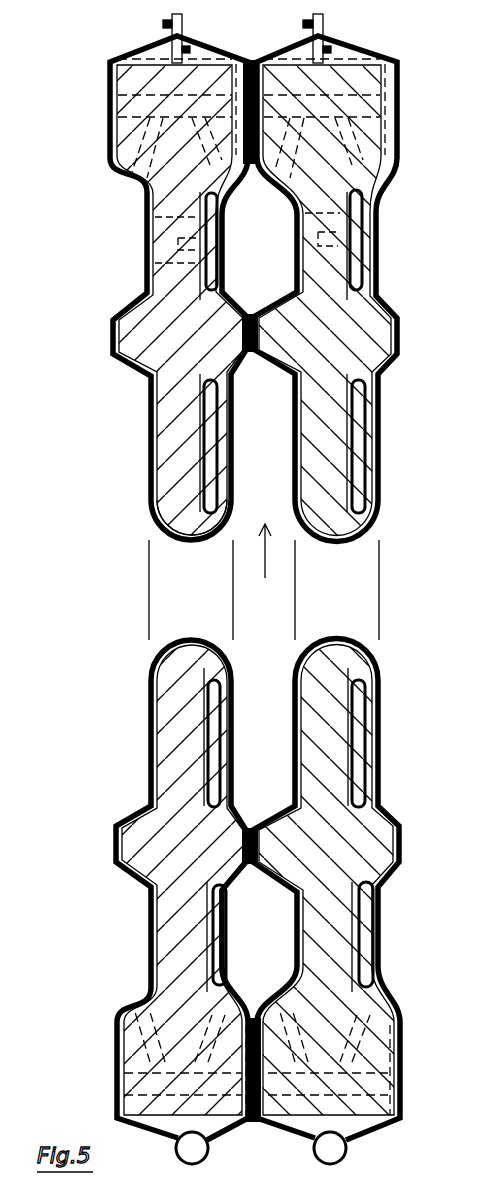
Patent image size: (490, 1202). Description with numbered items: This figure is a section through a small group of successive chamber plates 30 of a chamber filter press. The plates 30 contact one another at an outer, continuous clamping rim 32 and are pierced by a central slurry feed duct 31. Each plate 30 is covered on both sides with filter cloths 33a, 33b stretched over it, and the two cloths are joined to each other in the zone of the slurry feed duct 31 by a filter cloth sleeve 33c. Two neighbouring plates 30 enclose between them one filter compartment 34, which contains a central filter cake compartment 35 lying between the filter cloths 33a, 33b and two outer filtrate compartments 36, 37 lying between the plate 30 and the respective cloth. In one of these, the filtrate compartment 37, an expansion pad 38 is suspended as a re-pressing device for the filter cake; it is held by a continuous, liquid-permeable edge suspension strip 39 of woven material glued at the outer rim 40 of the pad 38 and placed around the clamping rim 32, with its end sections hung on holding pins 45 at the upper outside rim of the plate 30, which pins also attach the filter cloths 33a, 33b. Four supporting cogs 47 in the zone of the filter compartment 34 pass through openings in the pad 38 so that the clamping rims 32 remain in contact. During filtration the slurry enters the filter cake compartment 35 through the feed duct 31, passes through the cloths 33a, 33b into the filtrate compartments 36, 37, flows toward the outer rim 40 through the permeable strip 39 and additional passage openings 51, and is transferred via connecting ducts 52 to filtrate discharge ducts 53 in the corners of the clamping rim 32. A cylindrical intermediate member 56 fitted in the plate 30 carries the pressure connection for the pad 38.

The chamber plate 30 is at (168, 451).
The central slurry feed duct 31 is at (362, 603).
The outer continuous clamping rim 32 is at (378, 54).
The filter cloth 33a is at (150, 263).
The filter cloth 33b is at (228, 478).
The filter cloth sleeve 33c is at (195, 545).
The filter compartment 34 is at (264, 564).
The filter cake compartment 35 is at (258, 740).
The filtrate compartment 36 is at (310, 718).
The filtrate compartment 37 is at (222, 783).
The expansion pad 38 is at (232, 440).
The edge suspension strip 39 is at (400, 168).
The outer rim of the distensible cushion 40 is at (378, 992).
The holding pin 45 is at (326, 28).
The supporting cog 47 is at (358, 342).
The passage opening 51 is at (387, 175).
The connecting duct 52 is at (133, 180).
The filtrate discharge duct 53 is at (142, 106).
The cylindrical intermediate member 56 is at (330, 265).